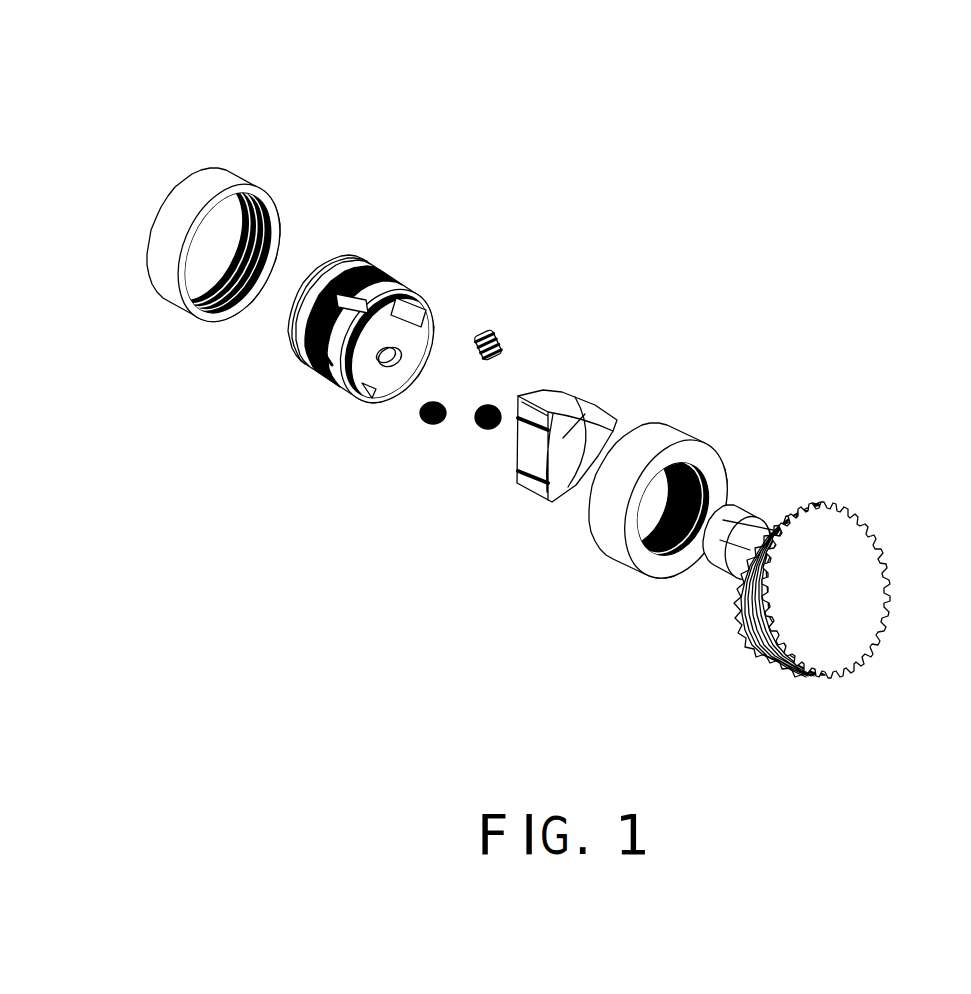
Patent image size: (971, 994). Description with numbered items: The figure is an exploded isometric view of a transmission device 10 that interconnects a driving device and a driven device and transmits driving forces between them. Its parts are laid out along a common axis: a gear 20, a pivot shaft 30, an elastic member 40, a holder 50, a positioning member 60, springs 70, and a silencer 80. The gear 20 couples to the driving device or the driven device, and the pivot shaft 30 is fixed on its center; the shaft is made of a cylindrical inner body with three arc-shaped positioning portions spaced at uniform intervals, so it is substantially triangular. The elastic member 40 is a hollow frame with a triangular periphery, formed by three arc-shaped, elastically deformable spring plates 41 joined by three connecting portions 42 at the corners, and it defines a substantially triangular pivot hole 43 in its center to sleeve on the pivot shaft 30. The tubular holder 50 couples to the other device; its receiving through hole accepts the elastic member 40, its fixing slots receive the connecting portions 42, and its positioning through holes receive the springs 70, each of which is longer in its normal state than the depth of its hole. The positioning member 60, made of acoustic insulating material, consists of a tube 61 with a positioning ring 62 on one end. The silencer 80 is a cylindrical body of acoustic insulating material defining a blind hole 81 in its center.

The transmission device 10 is at (494, 47).
The gear 20 is at (863, 575).
The pivot shaft 30 is at (749, 532).
The elastic member 40 is at (531, 464).
The spring plates 41 is at (527, 452).
The connecting portions 42 is at (543, 493).
The pivot hole 43 is at (567, 462).
The holder 50 is at (372, 272).
The positioning member 60 is at (624, 514).
The tube 61 is at (613, 545).
The positioning ring 62 is at (670, 558).
The springs 70 is at (497, 330).
The silencer 80 is at (260, 238).
The blind hole 81 is at (228, 240).